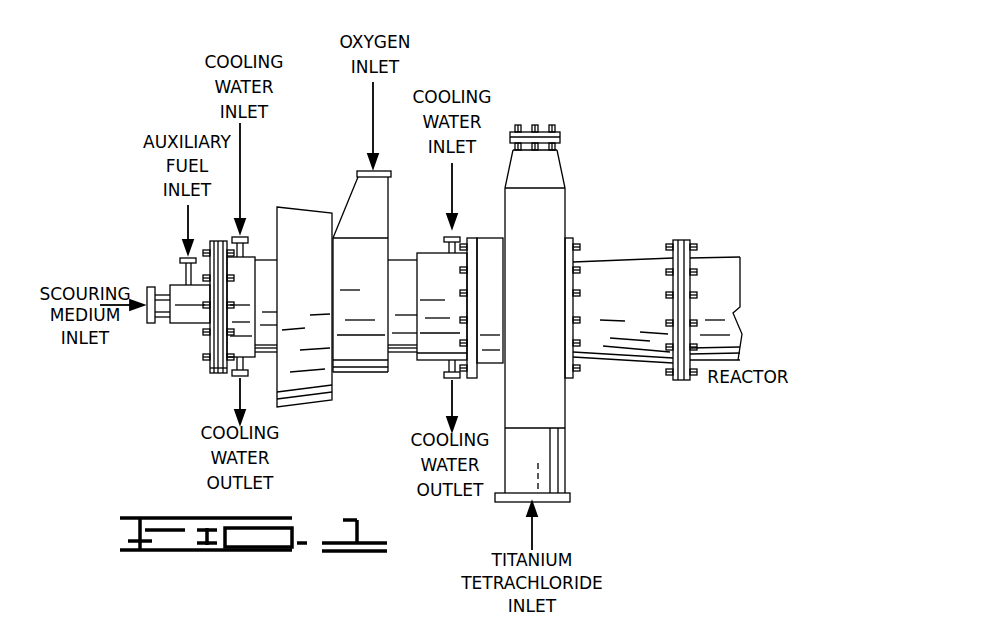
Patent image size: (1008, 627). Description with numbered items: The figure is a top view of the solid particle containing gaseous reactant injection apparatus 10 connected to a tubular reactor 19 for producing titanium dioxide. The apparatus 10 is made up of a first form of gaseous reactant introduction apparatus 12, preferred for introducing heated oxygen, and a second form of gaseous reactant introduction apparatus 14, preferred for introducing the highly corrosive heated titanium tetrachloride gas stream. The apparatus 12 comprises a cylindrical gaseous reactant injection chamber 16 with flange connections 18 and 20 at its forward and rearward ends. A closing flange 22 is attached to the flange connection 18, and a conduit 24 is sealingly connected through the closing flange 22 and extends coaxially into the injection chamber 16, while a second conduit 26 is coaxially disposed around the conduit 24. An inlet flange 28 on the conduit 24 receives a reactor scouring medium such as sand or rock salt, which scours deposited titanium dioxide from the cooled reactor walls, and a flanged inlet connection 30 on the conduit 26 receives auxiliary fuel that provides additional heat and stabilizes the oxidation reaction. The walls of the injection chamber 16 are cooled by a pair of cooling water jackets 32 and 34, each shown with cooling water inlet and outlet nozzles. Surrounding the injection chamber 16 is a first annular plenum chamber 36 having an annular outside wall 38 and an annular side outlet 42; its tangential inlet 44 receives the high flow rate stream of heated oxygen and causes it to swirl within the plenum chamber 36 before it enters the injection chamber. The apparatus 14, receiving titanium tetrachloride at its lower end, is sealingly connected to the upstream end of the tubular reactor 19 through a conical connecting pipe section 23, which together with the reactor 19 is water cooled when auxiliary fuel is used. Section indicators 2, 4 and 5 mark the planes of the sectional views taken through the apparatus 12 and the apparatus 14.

The section line 2- 2 is at (48, 305).
The section line 4- 4 is at (400, 143).
The section line 5- 5 is at (498, 307).
The solid particle containing gaseous reactant injection apparatus 10 is at (443, 68).
The first form of gaseous reactant introduction apparatus 12 is at (308, 195).
The second form of gaseous reactant introduction apparatus 14 is at (530, 108).
The cylindrical gaseous reactant injection chamber 16 is at (267, 355).
The flange connection 18 is at (220, 373).
The tubular reactor 19 is at (720, 268).
The flange connection 20 is at (468, 378).
The closing flange 22 is at (213, 240).
The conical connecting pipe section 23 is at (630, 265).
The conduit 24 is at (153, 325).
The second conduit 26 is at (190, 322).
The inlet flange 28 is at (150, 290).
The flanged inlet connection 30 is at (183, 258).
The cooling water jacket 32 is at (247, 262).
The cooling water jacket 34 is at (437, 256).
The first annular plenum chamber 36 is at (350, 381).
The annular outside wall 38 is at (360, 272).
The annular side outlet 42 is at (357, 265).
The tangential inlet 44 is at (360, 195).